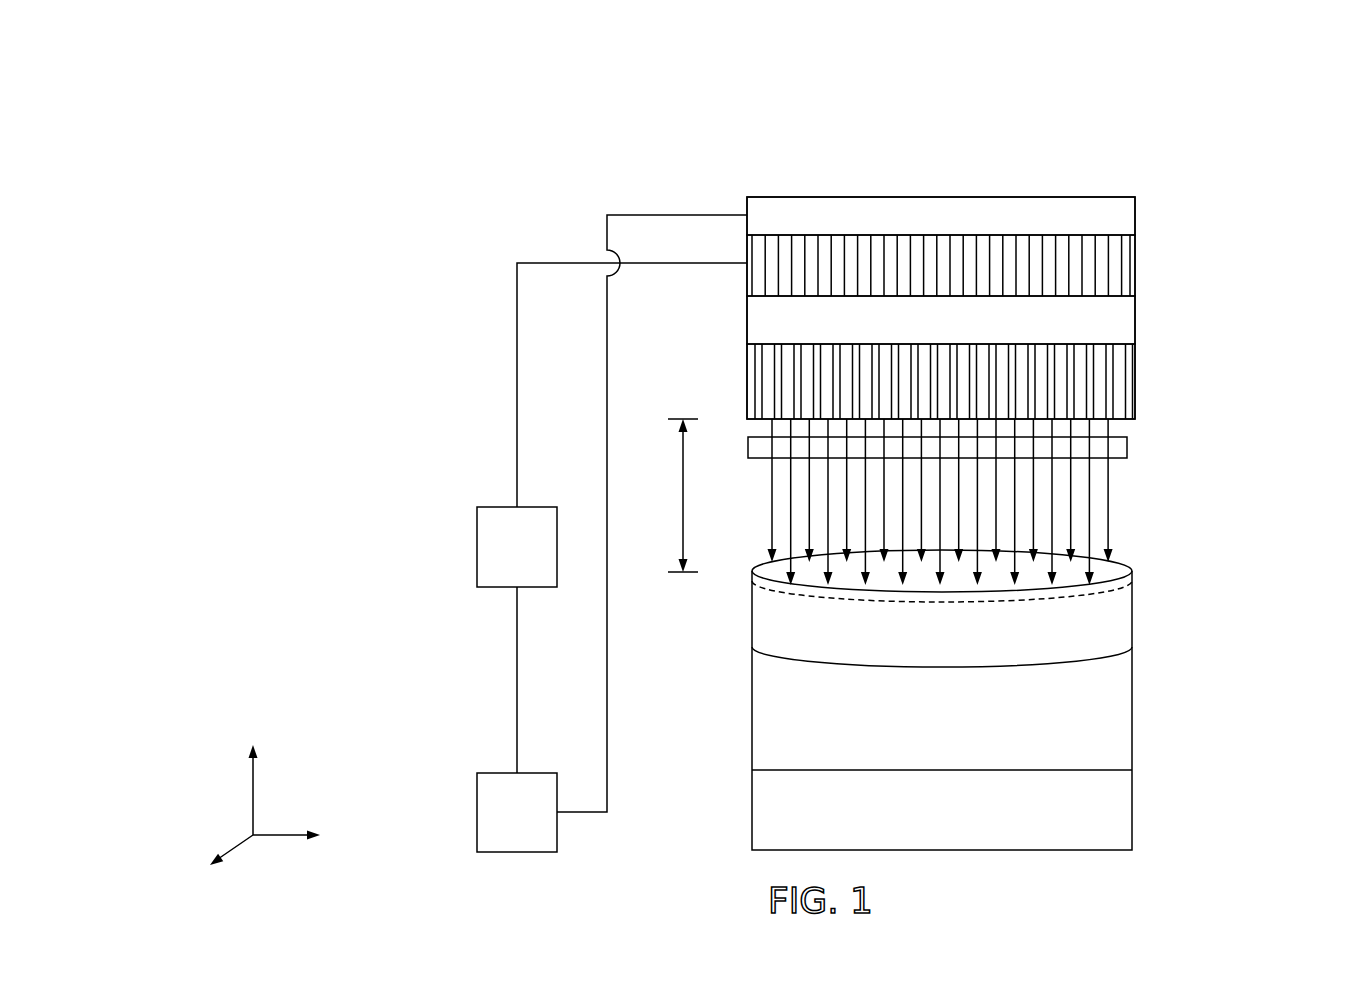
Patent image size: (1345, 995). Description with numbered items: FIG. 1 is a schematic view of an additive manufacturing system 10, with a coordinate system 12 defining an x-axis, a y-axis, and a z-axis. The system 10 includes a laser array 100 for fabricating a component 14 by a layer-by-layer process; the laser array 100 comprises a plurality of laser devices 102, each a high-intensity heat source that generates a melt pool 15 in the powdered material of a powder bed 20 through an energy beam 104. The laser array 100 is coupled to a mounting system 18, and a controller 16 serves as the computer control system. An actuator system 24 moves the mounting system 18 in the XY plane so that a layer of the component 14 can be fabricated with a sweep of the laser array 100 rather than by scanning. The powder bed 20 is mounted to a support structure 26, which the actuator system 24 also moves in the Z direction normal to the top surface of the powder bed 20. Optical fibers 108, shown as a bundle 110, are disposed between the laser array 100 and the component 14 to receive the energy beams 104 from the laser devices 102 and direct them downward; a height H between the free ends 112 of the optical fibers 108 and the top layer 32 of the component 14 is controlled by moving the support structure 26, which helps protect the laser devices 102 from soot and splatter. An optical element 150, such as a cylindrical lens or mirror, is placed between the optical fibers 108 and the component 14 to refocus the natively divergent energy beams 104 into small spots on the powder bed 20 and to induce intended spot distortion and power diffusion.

The additive manufacturing system 10 is at (1232, 130).
The coordinate system 12 is at (210, 801).
The component 14 is at (1120, 628).
The melt pool 15 is at (1135, 575).
The controller 16 is at (477, 547).
The mounting system 18 is at (1135, 215).
The powder bed 20 is at (1120, 717).
The actuator system 24 is at (477, 812).
The support structure 26 is at (1120, 812).
The top layer 32 is at (1113, 577).
The laser array 100 is at (1142, 262).
The laser devices 102 is at (981, 243).
The energy beams 104 is at (1108, 512).
The optical fibers 108 is at (1135, 382).
The bundle 110 is at (1135, 321).
The free ends 112 is at (1144, 418).
The optical element 150 is at (748, 440).